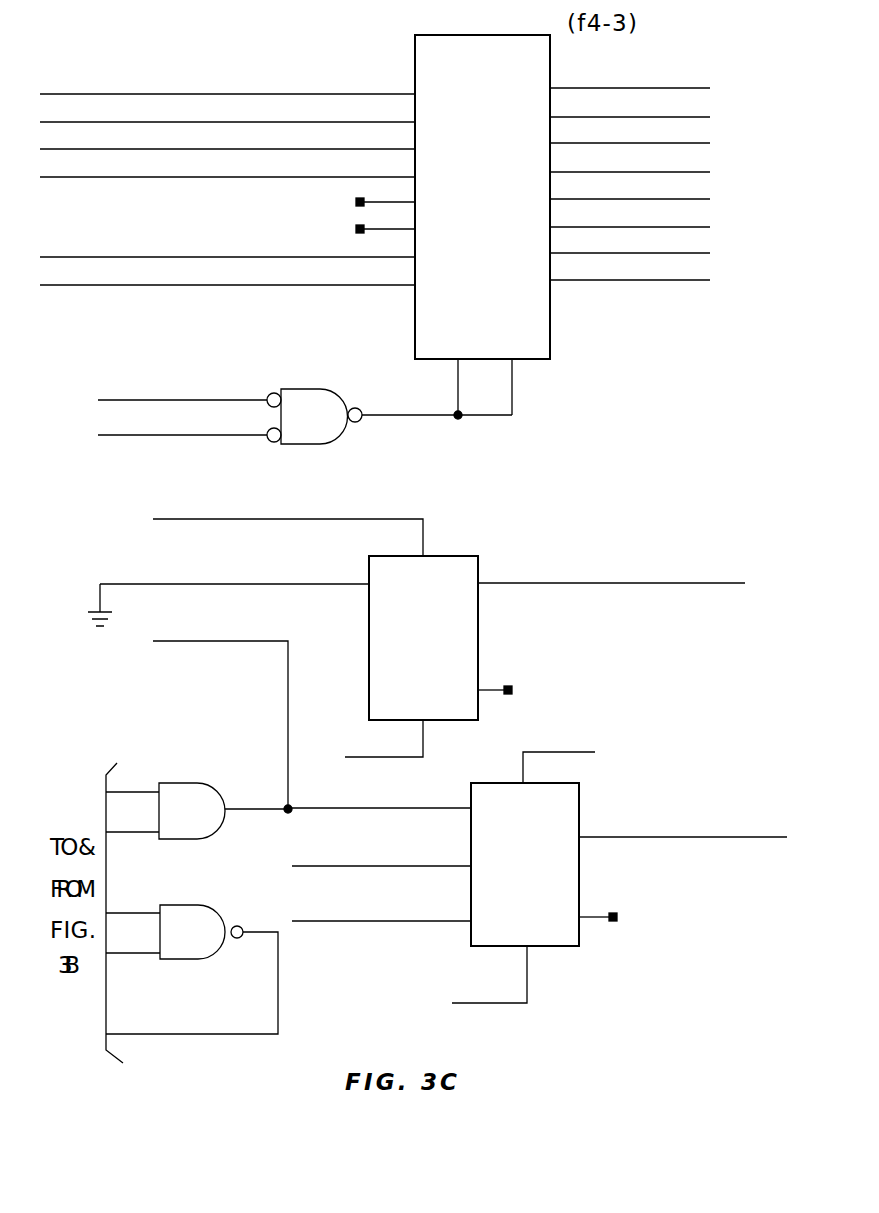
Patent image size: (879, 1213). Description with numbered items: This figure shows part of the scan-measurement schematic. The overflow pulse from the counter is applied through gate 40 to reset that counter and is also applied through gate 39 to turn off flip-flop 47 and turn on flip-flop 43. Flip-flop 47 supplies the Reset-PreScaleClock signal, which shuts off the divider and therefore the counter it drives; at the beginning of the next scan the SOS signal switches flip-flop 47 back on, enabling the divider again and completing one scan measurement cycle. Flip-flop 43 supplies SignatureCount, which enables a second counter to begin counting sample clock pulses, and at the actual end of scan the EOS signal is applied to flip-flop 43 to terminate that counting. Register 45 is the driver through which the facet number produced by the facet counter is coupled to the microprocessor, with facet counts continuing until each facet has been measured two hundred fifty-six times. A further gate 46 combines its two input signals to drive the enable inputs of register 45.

The register 45 is at (550, 345).
The LS32 OR gate 46 is at (327, 389).
The flip-flop 47 is at (478, 631).
The gate 39 is at (203, 783).
The gate 40 is at (203, 905).
The flip-flop 43 is at (583, 935).